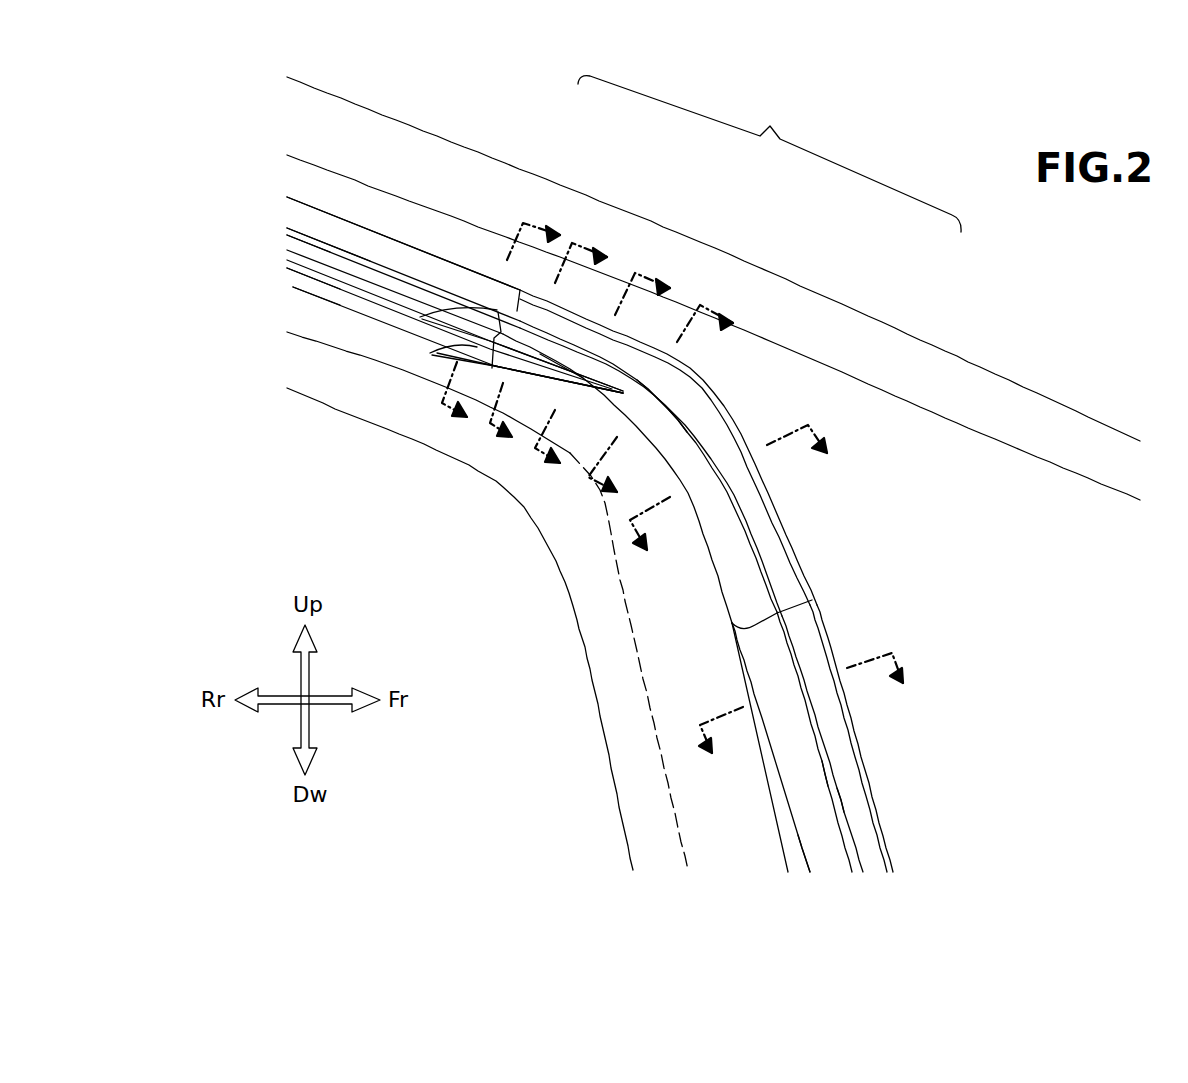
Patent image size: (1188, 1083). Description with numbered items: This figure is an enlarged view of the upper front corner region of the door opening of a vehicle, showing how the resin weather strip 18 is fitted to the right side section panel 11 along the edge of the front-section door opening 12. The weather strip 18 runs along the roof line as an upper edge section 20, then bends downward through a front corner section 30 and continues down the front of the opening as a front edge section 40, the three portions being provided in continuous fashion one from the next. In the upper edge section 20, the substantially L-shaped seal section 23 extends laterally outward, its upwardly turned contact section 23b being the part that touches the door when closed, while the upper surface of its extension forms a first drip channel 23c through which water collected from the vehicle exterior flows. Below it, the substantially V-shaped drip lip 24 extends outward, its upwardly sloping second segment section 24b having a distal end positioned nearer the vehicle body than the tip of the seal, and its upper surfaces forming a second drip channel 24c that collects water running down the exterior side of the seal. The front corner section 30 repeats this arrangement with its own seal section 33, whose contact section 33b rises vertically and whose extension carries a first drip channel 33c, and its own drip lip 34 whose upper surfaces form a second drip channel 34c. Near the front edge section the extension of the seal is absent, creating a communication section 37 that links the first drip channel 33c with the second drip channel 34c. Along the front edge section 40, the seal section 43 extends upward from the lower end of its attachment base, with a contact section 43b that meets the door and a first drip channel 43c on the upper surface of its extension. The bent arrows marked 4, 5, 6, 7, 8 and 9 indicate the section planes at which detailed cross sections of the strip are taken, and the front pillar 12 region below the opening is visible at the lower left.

The right side section panel 11 is at (1103, 424).
The front-section door opening 12 is at (598, 702).
The weather strip 18 is at (769, 154).
The upper edge section 20 is at (421, 246).
The seal section 23 is at (287, 242).
The contact section 23b is at (325, 258).
The first drip channel 23c is at (370, 250).
The drip lip 24 is at (287, 277).
The second segment section 24b is at (289, 284).
The second drip channel 24c is at (327, 300).
The front corner section 30 is at (732, 419).
The seal section 33 is at (388, 290).
The contact section 33b is at (537, 386).
The first drip channel 33c is at (578, 334).
The drip lip 34 is at (421, 318).
The second drip channel 34c is at (460, 350).
The communication section 37 is at (661, 390).
The front edge section 40 is at (822, 629).
The seal section 43 is at (833, 864).
The contact section 43b is at (800, 793).
The first drip channel 43c is at (857, 814).
The section line IV 4 is at (485, 311).
The section line V 5 is at (535, 337).
The section line VI 6 is at (598, 369).
The section line VII 7 is at (653, 398).
The section line VIII 8 is at (730, 490).
The section line IX 9 is at (798, 703).